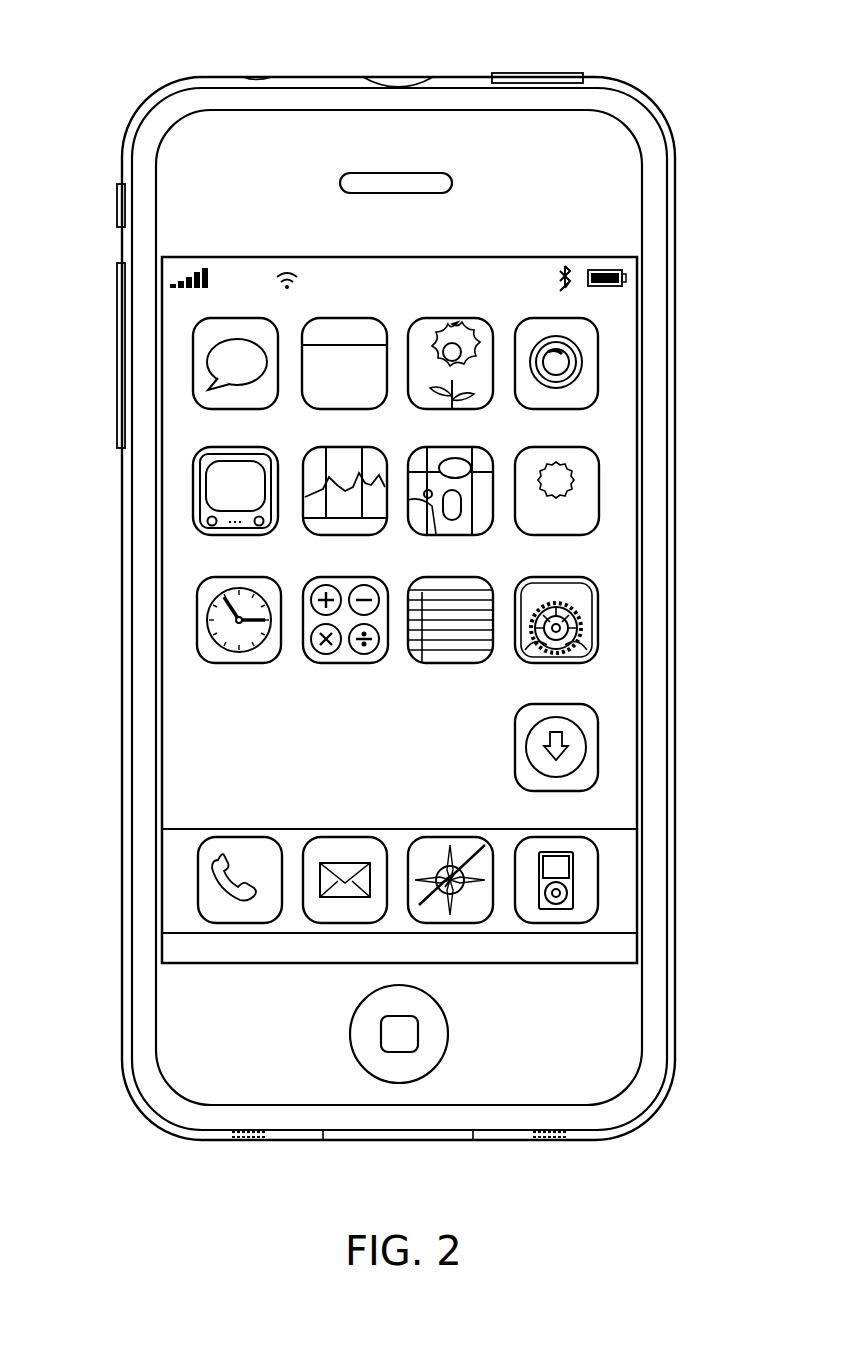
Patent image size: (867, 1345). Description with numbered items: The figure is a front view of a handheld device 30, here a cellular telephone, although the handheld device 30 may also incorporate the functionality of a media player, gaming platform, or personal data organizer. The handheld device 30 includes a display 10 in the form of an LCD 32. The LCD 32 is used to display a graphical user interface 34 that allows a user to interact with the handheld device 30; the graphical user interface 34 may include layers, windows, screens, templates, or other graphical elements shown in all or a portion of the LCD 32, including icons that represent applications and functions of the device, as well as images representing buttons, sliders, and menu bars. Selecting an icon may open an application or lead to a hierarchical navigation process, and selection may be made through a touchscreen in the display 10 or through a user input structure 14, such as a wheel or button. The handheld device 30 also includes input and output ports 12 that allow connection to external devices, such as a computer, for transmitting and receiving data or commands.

The display 10 is at (614, 480).
The input and output (I/O) ports 12 is at (253, 77).
The user input structure 14 is at (117, 208).
The handheld device 30 is at (146, 52).
The LCD 32 is at (626, 722).
The graphical user interface (GUI) 34 is at (178, 582).